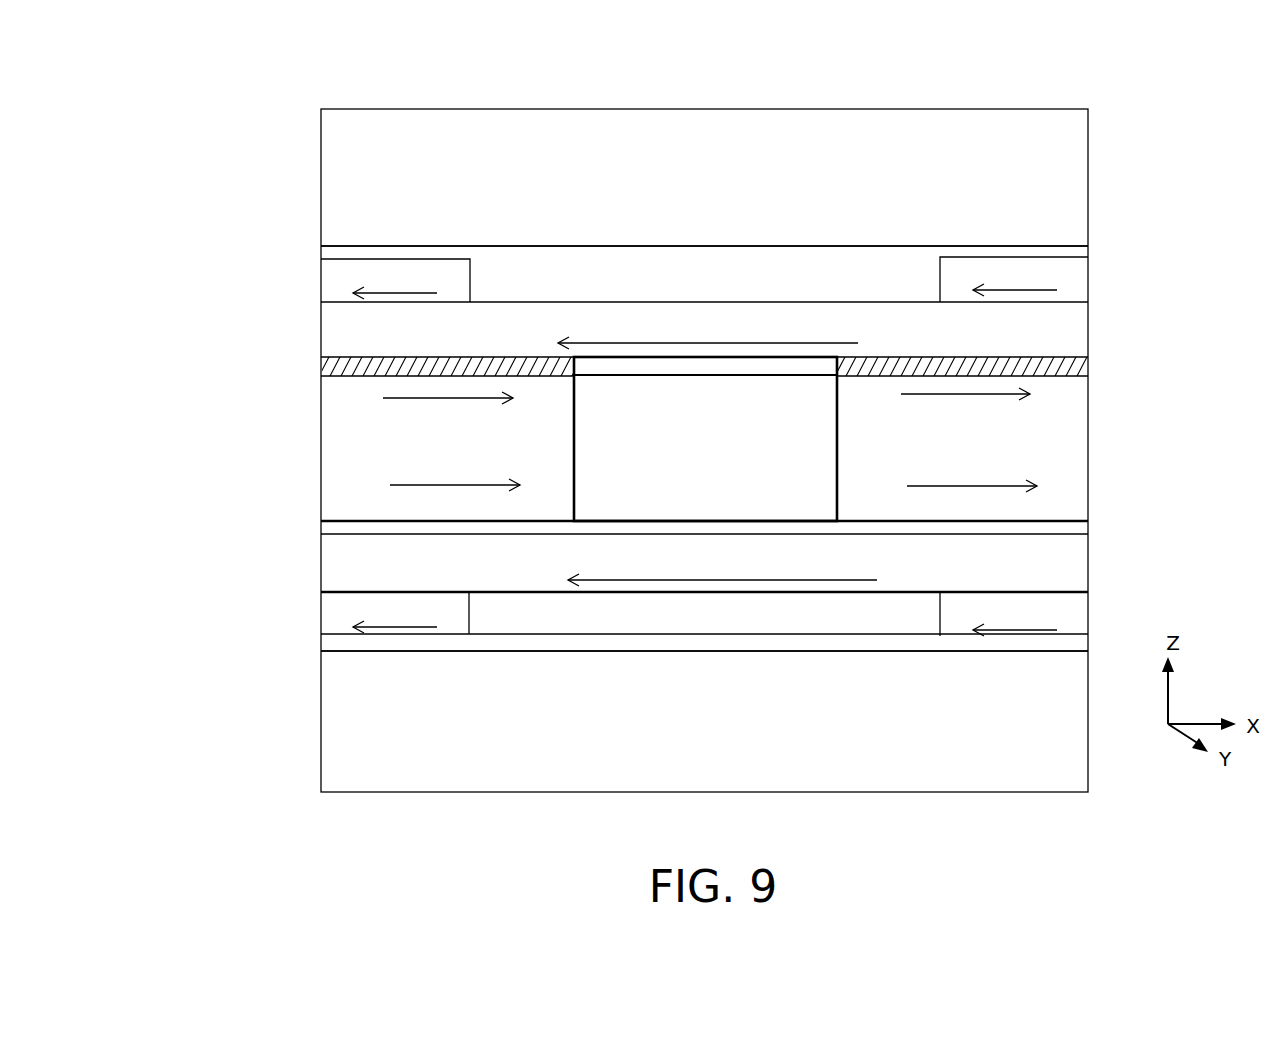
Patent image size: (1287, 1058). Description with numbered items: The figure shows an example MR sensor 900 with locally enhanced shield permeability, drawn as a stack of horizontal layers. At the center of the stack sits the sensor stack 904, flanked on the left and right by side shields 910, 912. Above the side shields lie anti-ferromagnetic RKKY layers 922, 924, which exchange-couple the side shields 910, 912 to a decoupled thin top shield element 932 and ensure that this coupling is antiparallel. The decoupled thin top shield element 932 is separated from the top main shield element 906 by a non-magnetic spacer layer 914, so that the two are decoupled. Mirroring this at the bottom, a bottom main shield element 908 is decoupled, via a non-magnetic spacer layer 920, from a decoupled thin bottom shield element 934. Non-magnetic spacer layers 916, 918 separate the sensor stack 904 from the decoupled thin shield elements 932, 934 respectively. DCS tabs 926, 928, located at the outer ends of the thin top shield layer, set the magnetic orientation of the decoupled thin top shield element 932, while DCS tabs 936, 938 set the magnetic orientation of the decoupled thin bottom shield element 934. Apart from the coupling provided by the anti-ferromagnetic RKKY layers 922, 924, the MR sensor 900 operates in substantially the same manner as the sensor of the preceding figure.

The MR sensor 900 is at (296, 118).
The sensor stack 904 is at (686, 459).
The top main shield element 906 is at (686, 187).
The bottom main shield element 908 is at (686, 746).
The side shield 910 is at (428, 459).
The side shield 912 is at (943, 459).
The non-magnetic spacer layer 914 is at (347, 245).
The non-magnetic spacer layer 916 is at (800, 365).
The non-magnetic spacer layer 918 is at (322, 522).
The non-magnetic spacer layer 920 is at (370, 652).
The anti-ferromagnetic RKKY layer 922 is at (322, 365).
The anti-ferromagnetic RKKY layer 924 is at (1088, 358).
The DCS tab 926 is at (376, 290).
The DCS tab 928 is at (994, 290).
The decoupled thin top shield element 932 is at (704, 325).
The decoupled thin bottom shield element 934 is at (686, 575).
The DCS tab 936 is at (376, 625).
The DCS tab 938 is at (995, 626).